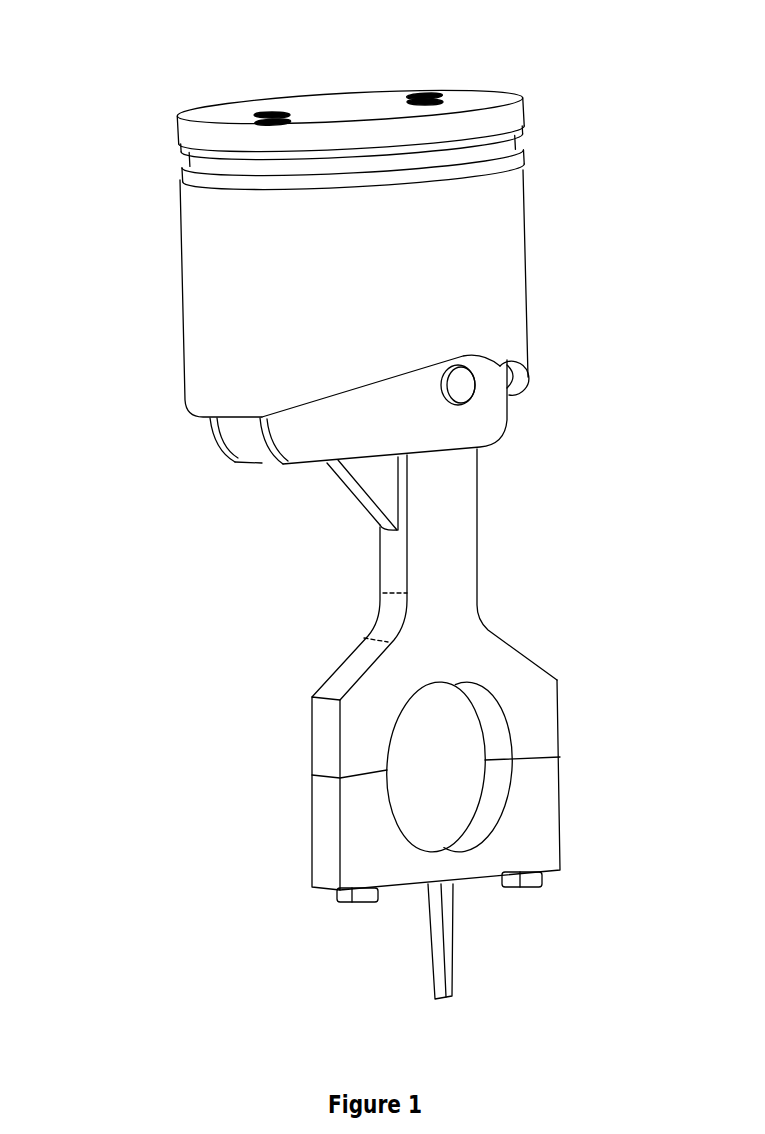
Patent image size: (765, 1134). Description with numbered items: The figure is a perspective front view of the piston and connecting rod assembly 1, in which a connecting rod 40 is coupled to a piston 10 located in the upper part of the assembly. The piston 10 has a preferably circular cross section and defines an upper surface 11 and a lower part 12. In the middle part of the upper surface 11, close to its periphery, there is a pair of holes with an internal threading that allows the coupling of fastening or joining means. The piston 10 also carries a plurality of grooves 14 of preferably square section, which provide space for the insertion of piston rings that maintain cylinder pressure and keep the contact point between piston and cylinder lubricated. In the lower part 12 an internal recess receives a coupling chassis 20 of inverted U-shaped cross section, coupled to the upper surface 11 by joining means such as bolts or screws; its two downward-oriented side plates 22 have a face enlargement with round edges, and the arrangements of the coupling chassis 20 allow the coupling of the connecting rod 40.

The piston assembly 1 is at (103, 72).
The piston 10 is at (515, 248).
The upper surface 11 is at (483, 107).
The lower part 12 is at (528, 398).
The grooves 14 is at (180, 180).
The coupling chassis 20 is at (548, 425).
The side plates 22 is at (483, 430).
The connecting rod 40 is at (592, 645).